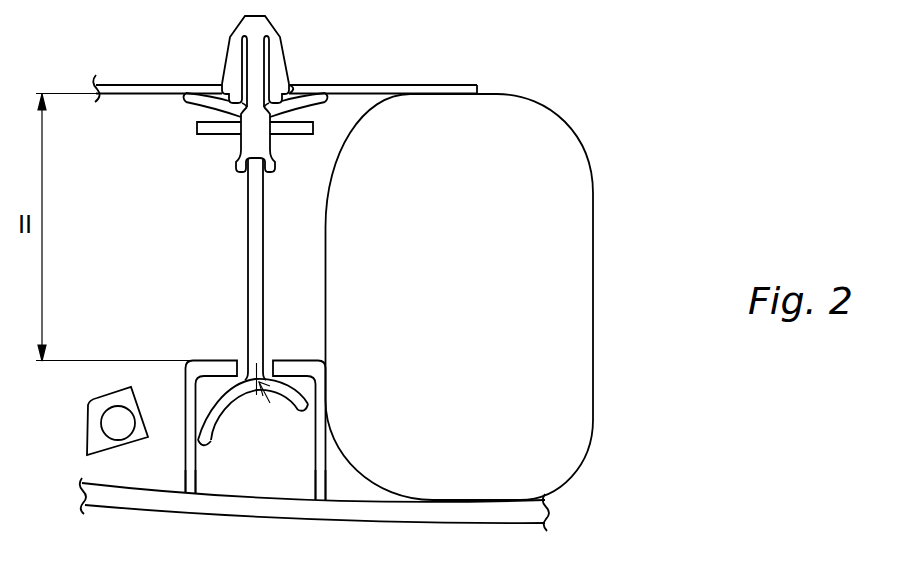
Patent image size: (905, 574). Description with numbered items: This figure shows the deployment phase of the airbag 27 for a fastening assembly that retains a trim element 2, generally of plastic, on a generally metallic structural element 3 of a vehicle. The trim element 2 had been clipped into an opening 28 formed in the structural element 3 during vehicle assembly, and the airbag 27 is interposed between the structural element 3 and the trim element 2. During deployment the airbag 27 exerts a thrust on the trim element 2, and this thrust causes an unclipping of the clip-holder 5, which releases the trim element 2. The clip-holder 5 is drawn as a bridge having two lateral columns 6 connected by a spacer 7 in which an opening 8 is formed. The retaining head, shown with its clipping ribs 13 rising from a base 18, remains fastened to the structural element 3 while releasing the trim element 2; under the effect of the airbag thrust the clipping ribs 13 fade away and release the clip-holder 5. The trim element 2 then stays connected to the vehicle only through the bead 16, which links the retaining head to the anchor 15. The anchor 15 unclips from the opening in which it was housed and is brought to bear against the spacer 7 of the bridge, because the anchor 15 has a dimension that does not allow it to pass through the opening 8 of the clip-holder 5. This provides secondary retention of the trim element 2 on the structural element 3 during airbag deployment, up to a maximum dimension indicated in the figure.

The trim element 2 is at (495, 517).
The structural element 3 is at (399, 88).
The clip-holder 5 is at (282, 410).
The lateral columns 6 is at (187, 475).
The spacer 7 is at (227, 370).
The opening 8 is at (289, 370).
The clipping ribs 13 is at (237, 160).
The anchor 15 is at (222, 407).
The bead 16 is at (247, 270).
The base 18 is at (212, 128).
The airbag 27 is at (472, 289).
The opening 28 is at (292, 88).